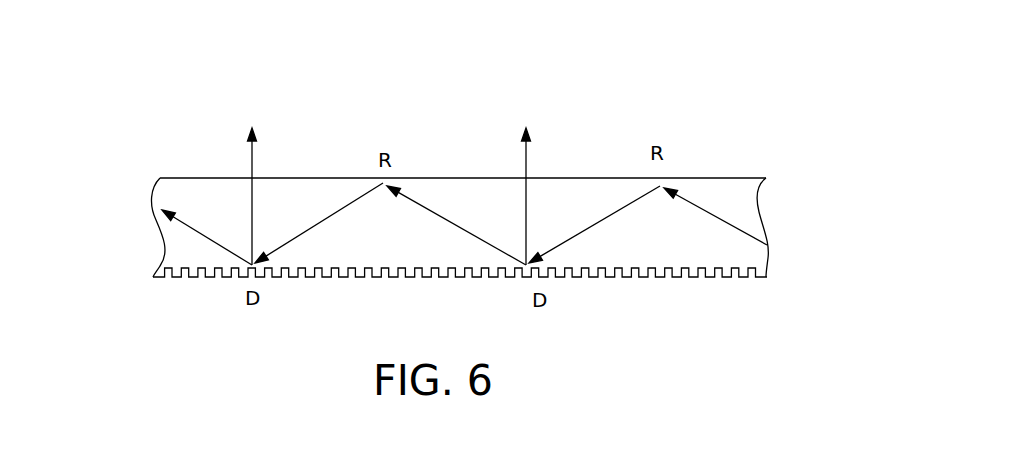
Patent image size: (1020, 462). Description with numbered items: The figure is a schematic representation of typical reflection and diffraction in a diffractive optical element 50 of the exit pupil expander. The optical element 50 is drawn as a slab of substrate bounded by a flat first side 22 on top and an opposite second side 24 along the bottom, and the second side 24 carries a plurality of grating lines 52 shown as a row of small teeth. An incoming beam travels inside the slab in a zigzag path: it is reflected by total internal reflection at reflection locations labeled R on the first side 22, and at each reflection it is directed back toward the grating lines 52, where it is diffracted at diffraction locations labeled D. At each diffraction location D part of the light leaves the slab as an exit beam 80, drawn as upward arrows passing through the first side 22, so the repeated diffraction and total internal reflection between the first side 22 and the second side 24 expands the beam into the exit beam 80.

The optical element 50 is at (462, 233).
The first side 22 is at (732, 175).
The second side 24 is at (481, 300).
The grating lines 52 is at (392, 297).
The exit beam 80 is at (387, 178).